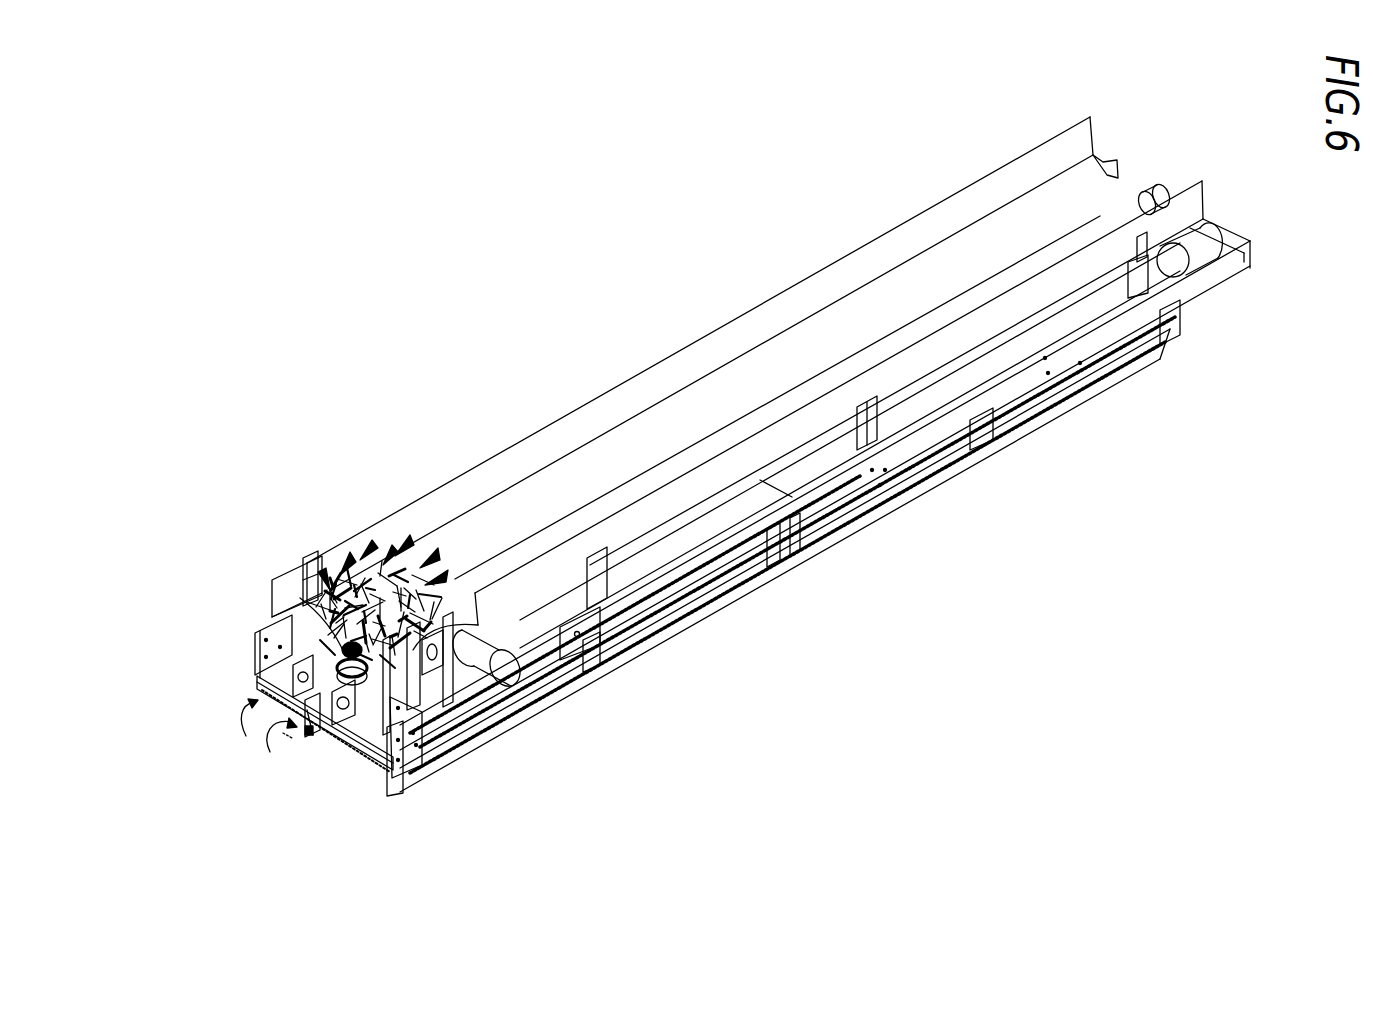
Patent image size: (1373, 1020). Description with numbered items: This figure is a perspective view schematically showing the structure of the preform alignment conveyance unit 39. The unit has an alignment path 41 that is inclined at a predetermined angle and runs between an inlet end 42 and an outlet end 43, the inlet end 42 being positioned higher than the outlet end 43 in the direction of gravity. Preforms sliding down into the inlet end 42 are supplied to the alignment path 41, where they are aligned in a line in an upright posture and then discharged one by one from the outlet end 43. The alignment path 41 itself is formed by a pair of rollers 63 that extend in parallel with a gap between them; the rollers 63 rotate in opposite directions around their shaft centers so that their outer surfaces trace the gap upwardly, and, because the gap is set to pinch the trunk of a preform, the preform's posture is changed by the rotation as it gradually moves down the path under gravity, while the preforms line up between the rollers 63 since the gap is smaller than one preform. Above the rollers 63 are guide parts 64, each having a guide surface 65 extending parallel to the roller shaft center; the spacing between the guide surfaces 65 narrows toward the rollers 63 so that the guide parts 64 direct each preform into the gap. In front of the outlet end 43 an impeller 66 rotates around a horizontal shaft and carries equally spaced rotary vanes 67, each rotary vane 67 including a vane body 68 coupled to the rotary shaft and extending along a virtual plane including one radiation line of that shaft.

The preform alignment conveyance unit 39 is at (670, 316).
The alignment path 41 is at (937, 312).
The inlet end 42 is at (1125, 204).
The outlet end 43 is at (243, 689).
The rollers 63 is at (292, 627).
The guide parts 64 is at (1020, 158).
The guide surface 65 is at (858, 302).
The impeller 66 is at (305, 550).
The rotary vanes 67 is at (351, 556).
The vane body 68 is at (375, 549).